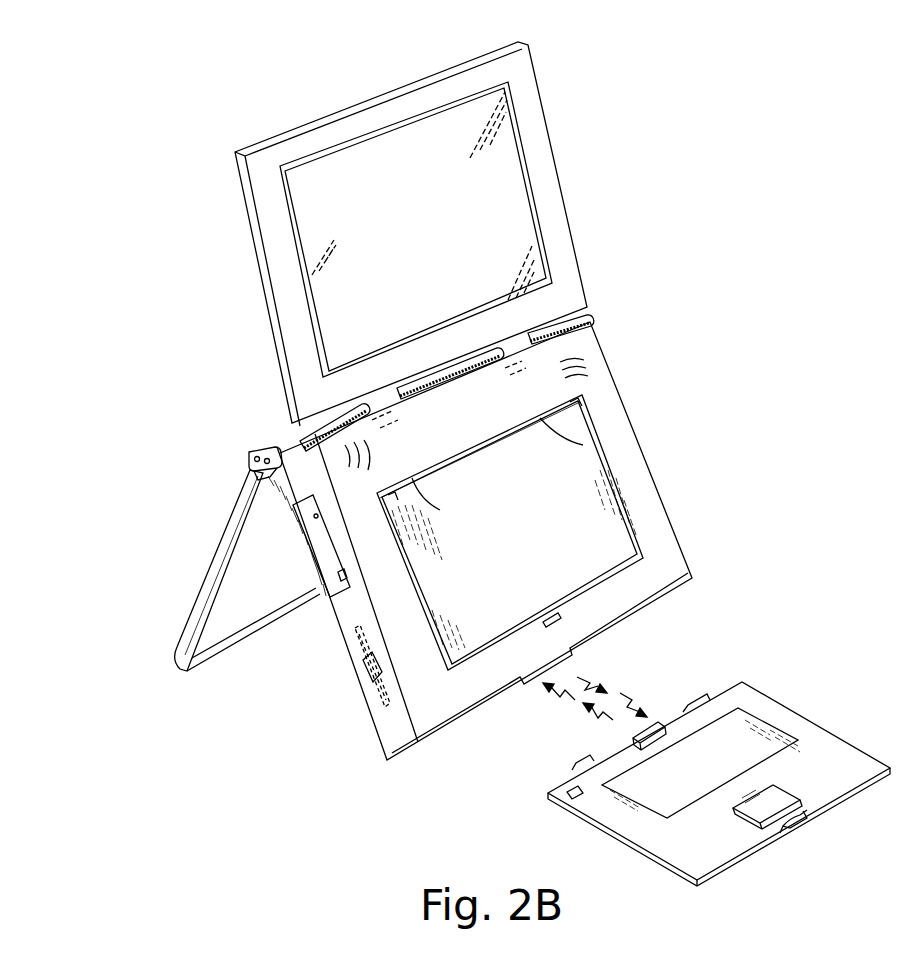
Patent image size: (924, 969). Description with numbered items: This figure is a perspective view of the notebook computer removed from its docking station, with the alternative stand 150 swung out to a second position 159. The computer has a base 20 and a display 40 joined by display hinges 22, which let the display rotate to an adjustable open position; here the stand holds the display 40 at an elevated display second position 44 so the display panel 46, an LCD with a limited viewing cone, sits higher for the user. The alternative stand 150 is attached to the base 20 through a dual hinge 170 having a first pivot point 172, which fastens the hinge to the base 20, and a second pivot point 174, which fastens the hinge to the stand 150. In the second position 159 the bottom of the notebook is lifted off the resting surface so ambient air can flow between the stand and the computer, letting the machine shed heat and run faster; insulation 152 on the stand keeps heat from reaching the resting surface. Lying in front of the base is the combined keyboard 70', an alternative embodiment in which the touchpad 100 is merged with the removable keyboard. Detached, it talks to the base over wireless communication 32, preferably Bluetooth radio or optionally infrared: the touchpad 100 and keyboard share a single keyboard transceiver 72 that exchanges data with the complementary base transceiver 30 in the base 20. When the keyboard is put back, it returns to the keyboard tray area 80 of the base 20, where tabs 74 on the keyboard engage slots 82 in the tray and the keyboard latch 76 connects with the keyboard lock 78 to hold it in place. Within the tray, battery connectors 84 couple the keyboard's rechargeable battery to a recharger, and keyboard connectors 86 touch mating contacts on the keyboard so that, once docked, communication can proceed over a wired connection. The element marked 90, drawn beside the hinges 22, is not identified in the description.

The base 20 is at (386, 742).
The display hinges 22 is at (370, 397).
The base transceiver 30 is at (566, 651).
The wireless communication 32 is at (622, 704).
The display 40 is at (248, 213).
The display second position 44 is at (262, 246).
The display panel 46 is at (320, 295).
The combined keyboard 70' is at (719, 778).
The keyboard transceiver 72 is at (634, 737).
The tabs 74 is at (707, 696).
The keyboard latch 76 is at (806, 813).
The keyboard lock 78 is at (545, 616).
The keyboard tray area 80 is at (580, 506).
The slots 82 is at (410, 480).
The battery connectors 84 is at (428, 472).
The keyboard connectors 86 is at (528, 425).
The speaker 90 is at (348, 441).
The touchpad 100 is at (776, 800).
The alternative stand 150 is at (204, 603).
The insulation 152 is at (258, 590).
The second position 159 is at (203, 566).
The dual hinge 170 is at (250, 452).
The first pivot point 172 is at (258, 472).
The second pivot point 174 is at (252, 460).